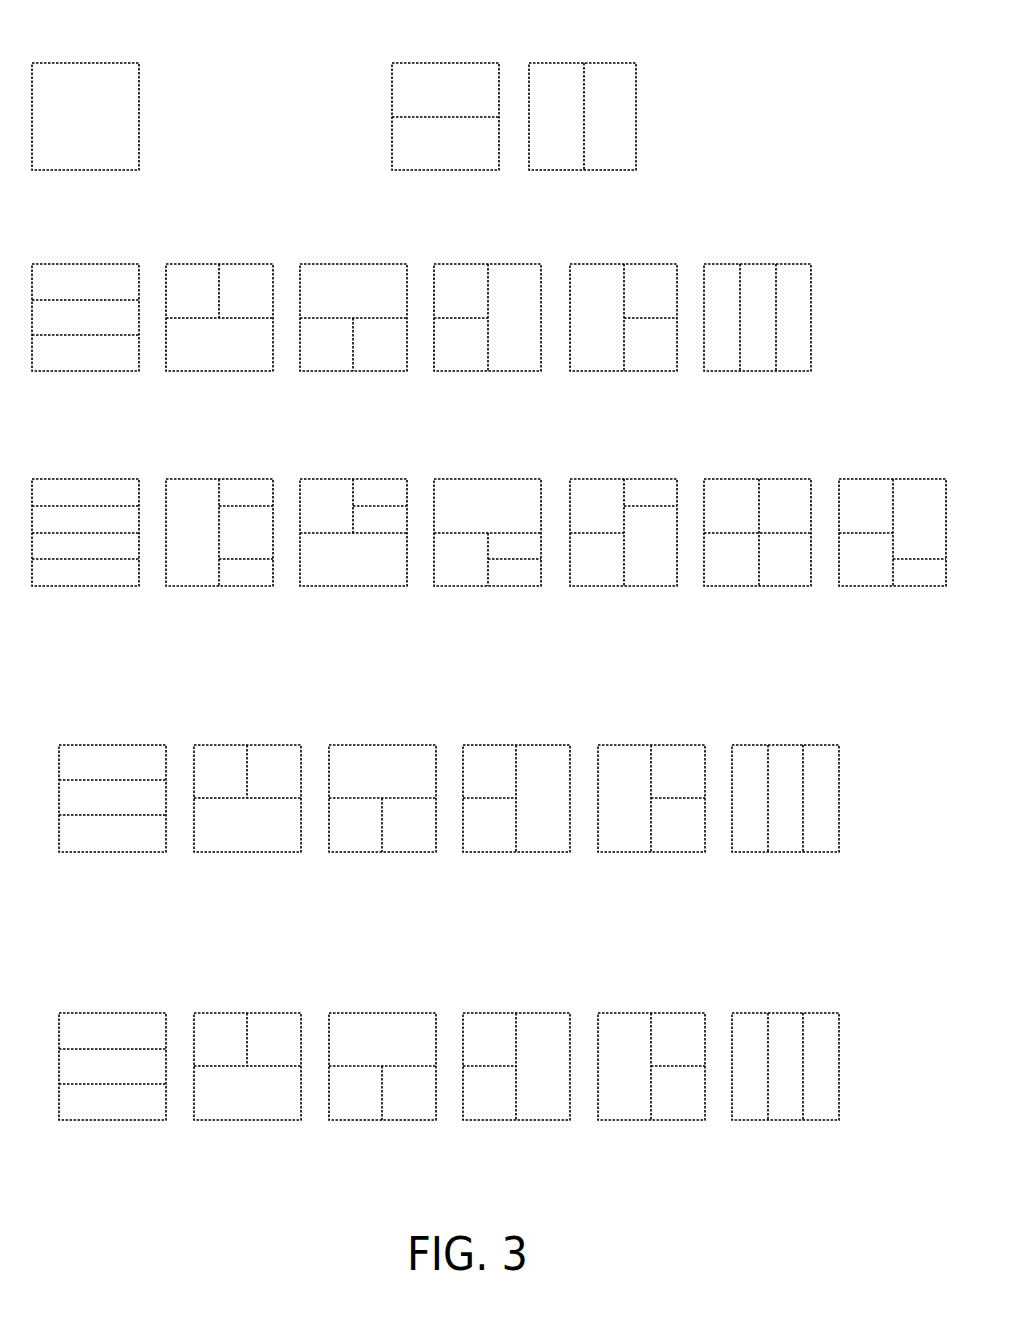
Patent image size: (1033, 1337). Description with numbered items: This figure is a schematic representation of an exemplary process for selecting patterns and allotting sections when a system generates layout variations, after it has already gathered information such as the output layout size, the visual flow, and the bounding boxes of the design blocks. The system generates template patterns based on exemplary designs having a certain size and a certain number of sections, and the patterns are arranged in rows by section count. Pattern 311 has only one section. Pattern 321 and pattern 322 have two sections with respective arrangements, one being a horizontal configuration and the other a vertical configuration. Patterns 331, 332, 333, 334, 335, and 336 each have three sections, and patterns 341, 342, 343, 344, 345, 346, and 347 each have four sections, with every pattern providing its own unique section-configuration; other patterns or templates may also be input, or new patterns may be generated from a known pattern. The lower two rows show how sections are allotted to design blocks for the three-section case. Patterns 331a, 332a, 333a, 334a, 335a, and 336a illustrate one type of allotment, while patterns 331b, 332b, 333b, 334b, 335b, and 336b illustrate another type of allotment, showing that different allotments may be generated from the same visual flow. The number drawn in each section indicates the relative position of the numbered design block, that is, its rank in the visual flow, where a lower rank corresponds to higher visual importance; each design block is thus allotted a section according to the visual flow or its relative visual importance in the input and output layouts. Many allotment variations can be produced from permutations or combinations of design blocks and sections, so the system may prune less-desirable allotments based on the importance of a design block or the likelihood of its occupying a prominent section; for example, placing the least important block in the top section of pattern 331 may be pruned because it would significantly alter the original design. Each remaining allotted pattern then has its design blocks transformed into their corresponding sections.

The pattern 311 is at (99, 62).
The pattern 321 is at (448, 62).
The pattern 322 is at (592, 62).
The pattern 331 is at (93, 263).
The pattern 332 is at (226, 263).
The pattern 333 is at (350, 263).
The pattern 334 is at (496, 263).
The pattern 335 is at (629, 263).
The pattern 336 is at (764, 263).
The pattern 341 is at (93, 478).
The pattern 342 is at (223, 478).
The pattern 343 is at (359, 478).
The pattern 344 is at (488, 478).
The pattern 345 is at (629, 478).
The pattern 346 is at (769, 478).
The pattern 347 is at (904, 478).
The pattern 331a is at (111, 744).
The pattern 332a is at (247, 744).
The pattern 333a is at (373, 744).
The pattern 334a is at (516, 744).
The pattern 335a is at (646, 744).
The pattern 336a is at (776, 744).
The pattern 331b is at (120, 1012).
The pattern 332b is at (253, 1012).
The pattern 333b is at (376, 1012).
The pattern 334b is at (523, 1012).
The pattern 335b is at (651, 1012).
The pattern 336b is at (781, 1012).